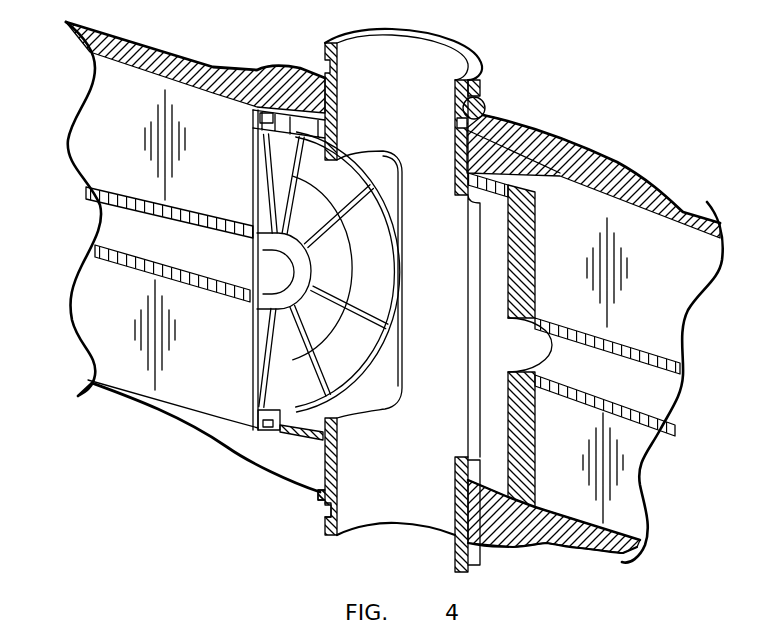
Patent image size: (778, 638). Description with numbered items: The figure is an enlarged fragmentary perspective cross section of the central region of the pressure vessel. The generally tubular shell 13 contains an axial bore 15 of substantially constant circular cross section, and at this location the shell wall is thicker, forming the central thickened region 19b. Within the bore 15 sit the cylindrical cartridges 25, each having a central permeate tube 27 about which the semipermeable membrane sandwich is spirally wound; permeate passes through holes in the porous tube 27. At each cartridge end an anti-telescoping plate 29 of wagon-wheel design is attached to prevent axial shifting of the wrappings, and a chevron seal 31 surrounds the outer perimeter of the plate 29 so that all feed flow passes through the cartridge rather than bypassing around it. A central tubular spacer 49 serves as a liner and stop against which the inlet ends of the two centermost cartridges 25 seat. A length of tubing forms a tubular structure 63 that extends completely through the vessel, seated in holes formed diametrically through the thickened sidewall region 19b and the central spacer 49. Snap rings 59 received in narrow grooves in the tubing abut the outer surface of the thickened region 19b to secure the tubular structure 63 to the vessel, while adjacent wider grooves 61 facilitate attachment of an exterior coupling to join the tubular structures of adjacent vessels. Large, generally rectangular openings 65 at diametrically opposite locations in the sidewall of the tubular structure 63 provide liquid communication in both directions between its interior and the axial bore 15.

The tubular shell 13 is at (112, 58).
The axial bore 15 is at (125, 385).
The central thickened region 19b is at (558, 147).
The cylindrical cartridge 25 is at (133, 100).
The central permeate tube 27 is at (97, 225).
The anti-telescoping plate 29 is at (333, 370).
The seal 31 is at (270, 410).
The central tubular spacer 49 is at (262, 152).
The snap ring 59 is at (487, 107).
The wider groove 61 is at (487, 87).
The tubular structure 63 is at (410, 70).
The large opening 65 is at (397, 336).